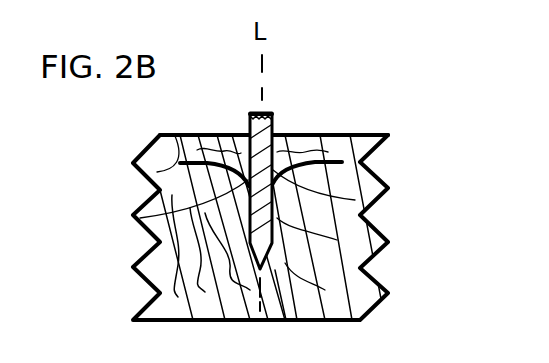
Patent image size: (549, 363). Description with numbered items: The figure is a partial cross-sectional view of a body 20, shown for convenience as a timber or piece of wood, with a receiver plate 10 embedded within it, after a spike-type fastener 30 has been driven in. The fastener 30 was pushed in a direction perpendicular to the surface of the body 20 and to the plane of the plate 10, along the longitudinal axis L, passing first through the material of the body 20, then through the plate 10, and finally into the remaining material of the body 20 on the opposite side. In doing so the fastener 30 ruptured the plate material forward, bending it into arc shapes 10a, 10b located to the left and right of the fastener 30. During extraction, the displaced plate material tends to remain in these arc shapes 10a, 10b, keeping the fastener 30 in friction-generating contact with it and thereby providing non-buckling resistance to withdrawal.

The plate 10 is at (183, 132).
The arc shape 10a is at (178, 217).
The arc shape 10b is at (370, 203).
The body 20 is at (363, 137).
The spike-type fastener 30 is at (275, 128).